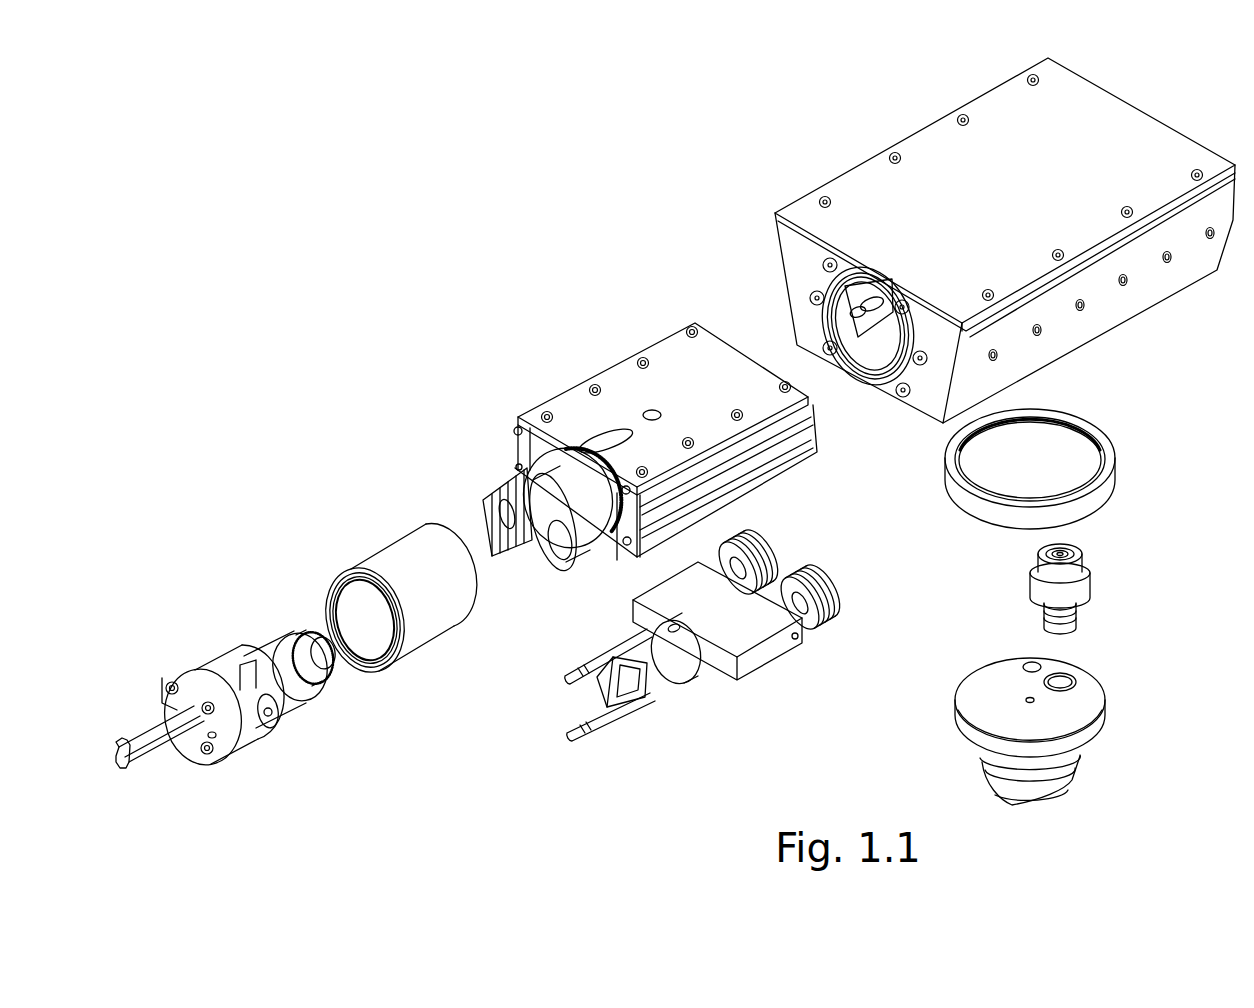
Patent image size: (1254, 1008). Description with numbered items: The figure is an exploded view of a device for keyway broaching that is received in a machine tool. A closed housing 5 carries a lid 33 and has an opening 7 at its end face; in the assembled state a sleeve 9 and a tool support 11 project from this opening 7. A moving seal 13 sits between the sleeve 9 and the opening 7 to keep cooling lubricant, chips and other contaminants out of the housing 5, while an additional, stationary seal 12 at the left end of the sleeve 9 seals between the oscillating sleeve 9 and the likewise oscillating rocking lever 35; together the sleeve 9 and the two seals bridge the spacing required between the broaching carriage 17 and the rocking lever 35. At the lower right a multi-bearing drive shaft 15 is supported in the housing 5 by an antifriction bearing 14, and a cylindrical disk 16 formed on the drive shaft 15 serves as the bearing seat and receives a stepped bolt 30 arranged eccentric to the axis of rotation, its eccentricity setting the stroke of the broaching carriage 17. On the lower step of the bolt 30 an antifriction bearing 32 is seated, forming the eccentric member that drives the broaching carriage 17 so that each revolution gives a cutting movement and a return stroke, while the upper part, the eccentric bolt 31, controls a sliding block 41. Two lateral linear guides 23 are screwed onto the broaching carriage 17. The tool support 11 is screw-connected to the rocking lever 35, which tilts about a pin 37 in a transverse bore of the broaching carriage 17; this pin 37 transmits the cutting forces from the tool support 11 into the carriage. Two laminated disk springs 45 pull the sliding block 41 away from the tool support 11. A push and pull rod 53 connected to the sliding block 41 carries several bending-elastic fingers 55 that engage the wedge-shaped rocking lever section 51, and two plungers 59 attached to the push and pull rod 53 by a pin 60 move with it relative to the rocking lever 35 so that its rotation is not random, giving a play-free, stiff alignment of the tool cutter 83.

The housing 5 is at (1183, 270).
The opening 7 is at (852, 298).
The sleeve 9 is at (345, 576).
The tool support 11 is at (148, 750).
The additional seal 12 is at (322, 601).
The seal 13 is at (873, 383).
The antifriction bearing 14 is at (1108, 487).
The drive shaft 15 is at (1070, 767).
The disk 16 is at (1095, 727).
The broaching carriage 17 is at (637, 414).
The lateral linear guides 23 is at (524, 431).
The stepped bolt 30 is at (1010, 578).
The eccentric bolt 31 is at (1115, 570).
The antifriction bearing 32 is at (1080, 593).
The housing lid 33 is at (1128, 124).
The rocking lever 35 is at (234, 744).
The pin 37 is at (270, 725).
The sliding block 41 is at (664, 641).
The laminated disk springs 45 is at (832, 586).
The rocking lever section 51 is at (322, 670).
The push and pull rod 53 is at (685, 661).
The fingers 55 is at (610, 701).
The plungers 59 is at (570, 736).
The pin 60 is at (660, 676).
The tool cutter 83 is at (121, 768).